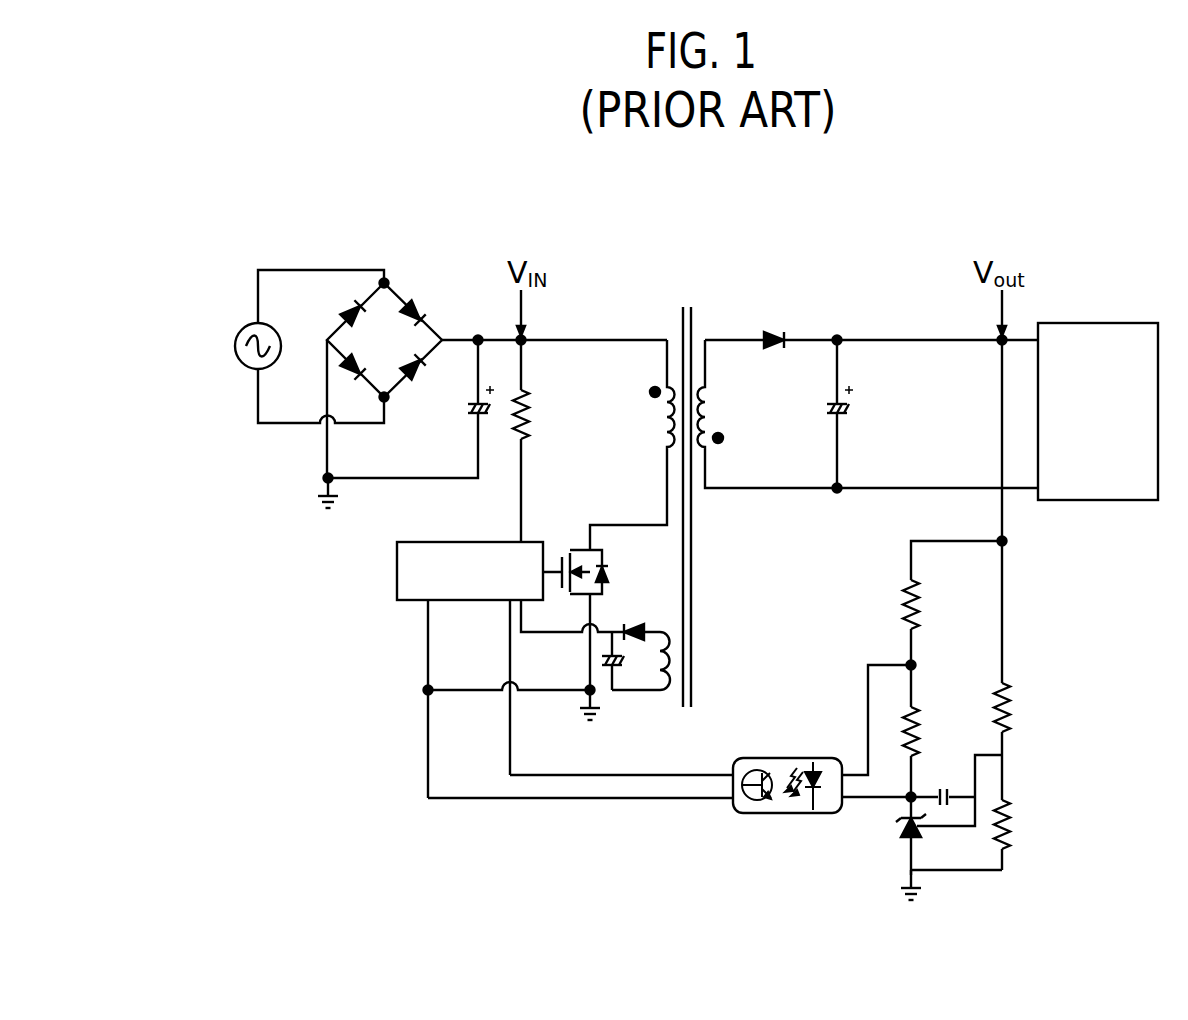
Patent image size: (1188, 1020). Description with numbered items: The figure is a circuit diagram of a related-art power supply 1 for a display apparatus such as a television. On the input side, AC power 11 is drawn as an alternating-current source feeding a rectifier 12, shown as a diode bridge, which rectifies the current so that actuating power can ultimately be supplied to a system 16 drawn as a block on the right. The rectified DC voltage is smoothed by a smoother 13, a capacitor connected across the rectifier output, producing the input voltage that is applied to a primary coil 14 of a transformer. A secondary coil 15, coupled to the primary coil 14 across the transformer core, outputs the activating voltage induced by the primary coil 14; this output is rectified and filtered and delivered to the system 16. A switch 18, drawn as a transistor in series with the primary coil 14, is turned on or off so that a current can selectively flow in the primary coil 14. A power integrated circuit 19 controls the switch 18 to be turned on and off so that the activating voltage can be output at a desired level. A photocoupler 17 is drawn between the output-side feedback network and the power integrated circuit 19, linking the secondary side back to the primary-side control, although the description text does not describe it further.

The power supply 1 is at (659, 247).
The AC power 11 is at (234, 347).
The rectifier 12 is at (418, 300).
The smoother 13 is at (463, 416).
The primary coil 14 is at (650, 418).
The secondary coil 15 is at (713, 418).
The system 16 is at (1097, 322).
The photocoupler 17 is at (785, 757).
The switch 18 is at (612, 574).
The power integrated circuit 19 is at (395, 573).